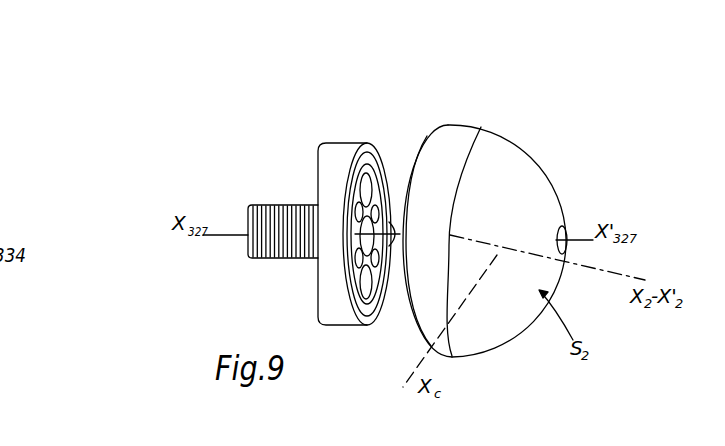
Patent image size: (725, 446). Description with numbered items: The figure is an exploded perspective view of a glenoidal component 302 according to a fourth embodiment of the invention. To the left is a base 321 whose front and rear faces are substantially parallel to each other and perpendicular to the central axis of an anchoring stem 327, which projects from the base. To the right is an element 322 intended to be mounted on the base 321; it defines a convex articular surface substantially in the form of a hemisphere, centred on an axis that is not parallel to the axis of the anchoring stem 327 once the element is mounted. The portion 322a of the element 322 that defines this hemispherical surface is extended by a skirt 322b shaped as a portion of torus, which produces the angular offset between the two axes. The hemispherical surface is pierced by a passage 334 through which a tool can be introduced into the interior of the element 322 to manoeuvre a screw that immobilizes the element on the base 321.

The glenoidal component 302 is at (517, 77).
The base 321 is at (353, 143).
The element 322 is at (543, 173).
The portion 322a is at (513, 138).
The skirt 322b is at (458, 130).
The anchoring stem 327 is at (285, 205).
The passage 334 is at (572, 229).